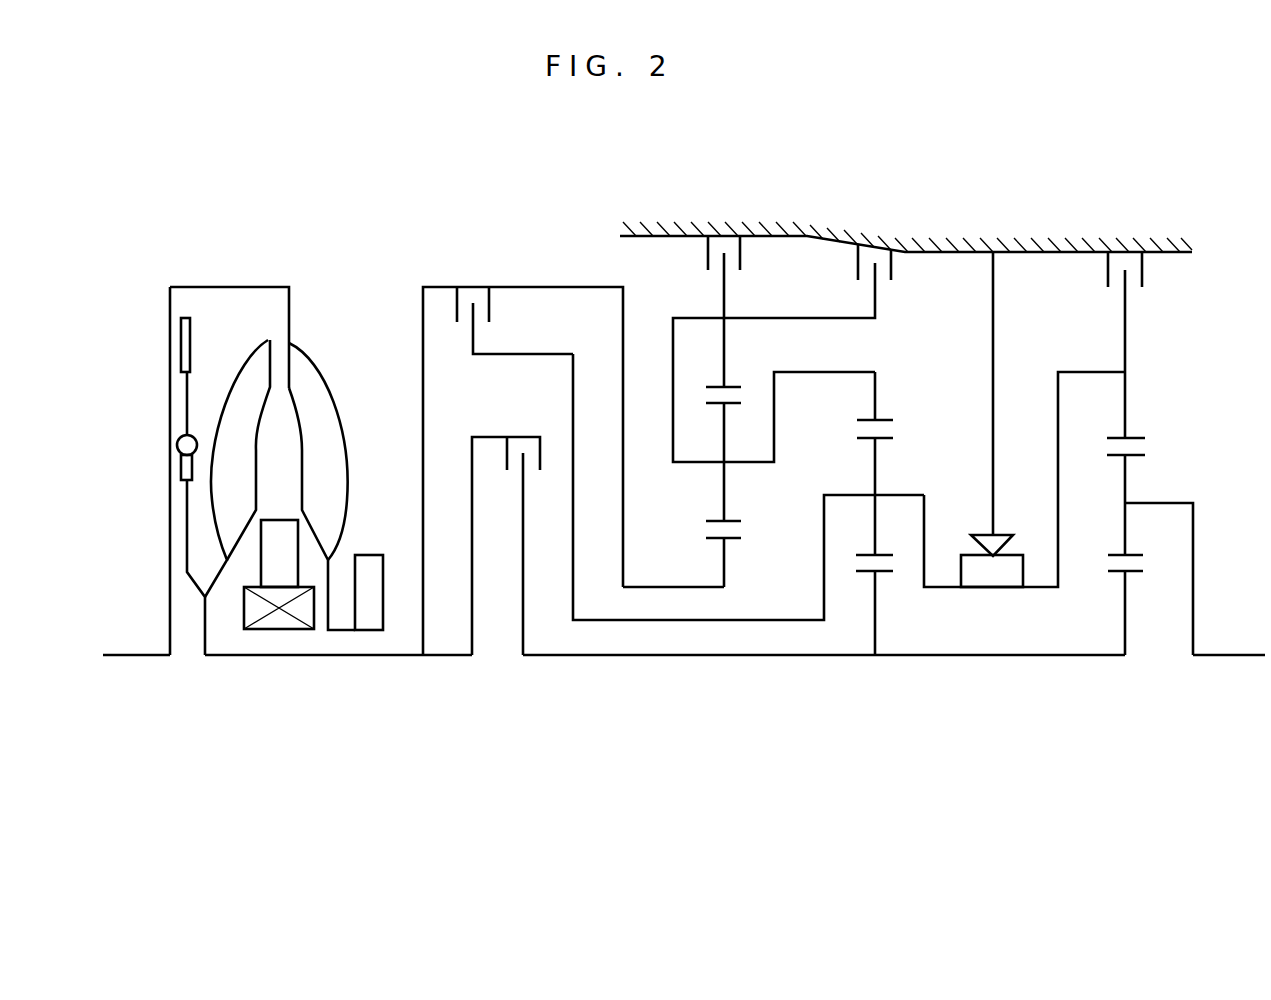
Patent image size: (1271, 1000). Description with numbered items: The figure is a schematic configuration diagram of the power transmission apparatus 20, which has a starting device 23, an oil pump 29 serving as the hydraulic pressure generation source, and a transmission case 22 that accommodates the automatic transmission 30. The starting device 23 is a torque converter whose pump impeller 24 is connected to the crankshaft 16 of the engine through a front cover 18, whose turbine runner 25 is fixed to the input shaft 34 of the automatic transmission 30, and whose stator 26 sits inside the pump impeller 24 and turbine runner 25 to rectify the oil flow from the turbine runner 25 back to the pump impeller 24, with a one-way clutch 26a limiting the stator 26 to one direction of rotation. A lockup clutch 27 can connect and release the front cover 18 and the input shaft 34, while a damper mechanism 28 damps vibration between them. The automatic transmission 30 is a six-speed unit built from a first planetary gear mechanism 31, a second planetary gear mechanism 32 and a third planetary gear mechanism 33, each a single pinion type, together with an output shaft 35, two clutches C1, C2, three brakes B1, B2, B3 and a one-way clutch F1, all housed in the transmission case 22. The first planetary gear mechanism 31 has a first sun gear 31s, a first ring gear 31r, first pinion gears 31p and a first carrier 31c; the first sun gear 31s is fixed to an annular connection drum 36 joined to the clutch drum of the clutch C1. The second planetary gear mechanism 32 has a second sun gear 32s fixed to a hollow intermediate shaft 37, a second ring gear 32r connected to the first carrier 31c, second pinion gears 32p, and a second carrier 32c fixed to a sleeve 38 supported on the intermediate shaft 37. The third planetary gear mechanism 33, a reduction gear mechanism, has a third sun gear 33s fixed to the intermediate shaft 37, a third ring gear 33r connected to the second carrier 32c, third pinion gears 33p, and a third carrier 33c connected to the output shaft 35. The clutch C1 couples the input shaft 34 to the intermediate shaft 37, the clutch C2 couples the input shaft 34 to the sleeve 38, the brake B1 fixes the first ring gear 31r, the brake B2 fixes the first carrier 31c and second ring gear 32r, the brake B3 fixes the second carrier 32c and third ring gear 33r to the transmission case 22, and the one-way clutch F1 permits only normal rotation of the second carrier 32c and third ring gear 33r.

The crankshaft 16 is at (120, 657).
The front cover 18 is at (170, 503).
The power transmission apparatus 20 is at (130, 298).
The transmission case 22 is at (1165, 256).
The starting device 23 is at (310, 343).
The pump impeller 24 is at (320, 385).
The turbine runner 25 is at (262, 353).
The stator 26 is at (278, 572).
The one-way clutch 26a is at (242, 608).
The lockup clutch 27 is at (200, 345).
The damper mechanism 28 is at (175, 430).
The oil pump 29 is at (352, 608).
The automatic transmission 30 is at (432, 265).
The first planetary gear mechanism 31 is at (751, 524).
The first ring gear 31r is at (728, 352).
The first carrier 31c is at (776, 458).
The first pinion gears 31p is at (728, 500).
The first sun gear 31s is at (730, 634).
The second planetary gear mechanism 32 is at (959, 541).
The second ring gear 32r is at (872, 410).
The second pinion gears 32p is at (879, 458).
The second carrier 32c is at (928, 528).
The second sun gear 32s is at (870, 590).
The third planetary gear mechanism 33 is at (1189, 555).
The third ring gear 33r is at (1128, 400).
The third pinion gears 33p is at (1128, 488).
The third carrier 33c is at (1195, 540).
The third sun gear 33s is at (1128, 600).
The input shaft 34 is at (410, 657).
The output shaft 35 is at (1240, 655).
The annular connection drum 36 is at (622, 558).
The intermediate shaft 37 is at (1025, 657).
The sleeve 38 is at (770, 620).
The clutch C1 is at (505, 487).
The clutch C2 is at (490, 340).
The brake B1 is at (910, 275).
The brake B2 is at (752, 252).
The brake B3 is at (1102, 287).
The one-way clutch F1 is at (958, 565).